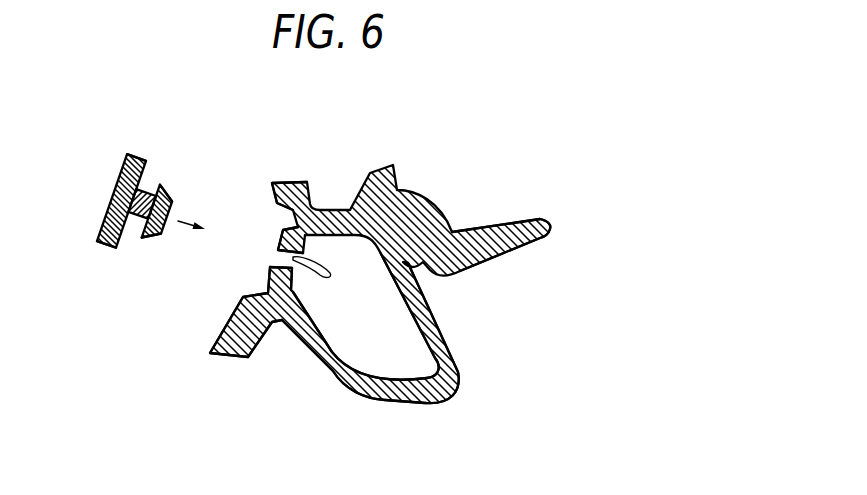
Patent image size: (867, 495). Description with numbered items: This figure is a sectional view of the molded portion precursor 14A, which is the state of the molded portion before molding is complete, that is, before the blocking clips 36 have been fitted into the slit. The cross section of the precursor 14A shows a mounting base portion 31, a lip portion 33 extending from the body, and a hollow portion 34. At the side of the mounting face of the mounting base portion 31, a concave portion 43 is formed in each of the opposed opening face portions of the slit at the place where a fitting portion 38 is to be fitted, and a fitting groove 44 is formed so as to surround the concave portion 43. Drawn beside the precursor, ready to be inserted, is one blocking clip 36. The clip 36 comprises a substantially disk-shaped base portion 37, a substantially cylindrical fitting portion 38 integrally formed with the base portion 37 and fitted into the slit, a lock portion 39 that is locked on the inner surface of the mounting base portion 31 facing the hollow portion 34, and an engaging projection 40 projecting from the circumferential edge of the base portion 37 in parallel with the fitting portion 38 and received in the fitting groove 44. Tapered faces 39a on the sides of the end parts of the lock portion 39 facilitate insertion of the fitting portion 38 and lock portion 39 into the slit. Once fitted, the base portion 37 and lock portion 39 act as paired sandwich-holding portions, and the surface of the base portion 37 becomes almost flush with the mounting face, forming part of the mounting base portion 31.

The molded portion precursor 14A is at (432, 138).
The mounting base portion 31 is at (233, 332).
The lip portion 33 is at (512, 222).
The hollow portion 34 is at (360, 352).
The blocking clip 36 is at (144, 189).
The base portion 37 is at (108, 203).
The fitting portion 38 is at (145, 188).
The lock portion 39 is at (172, 225).
The tapered face 39a is at (164, 193).
The engaging projection 40 is at (147, 166).
The concave portion 43 is at (326, 276).
The fitting groove 44 is at (295, 223).